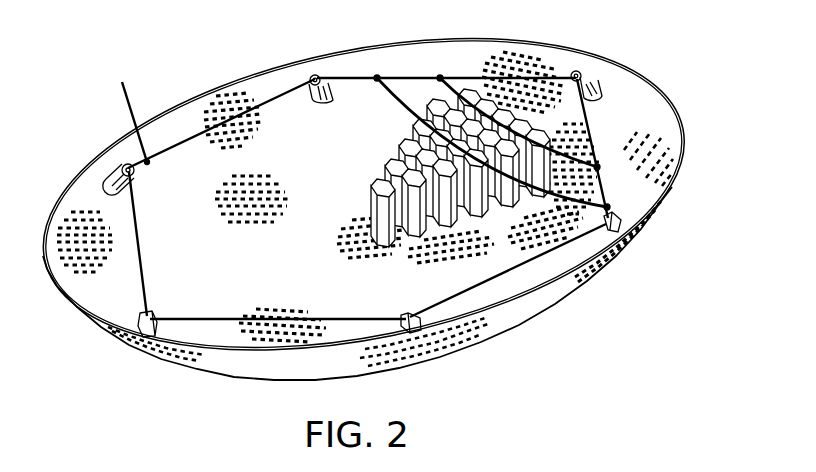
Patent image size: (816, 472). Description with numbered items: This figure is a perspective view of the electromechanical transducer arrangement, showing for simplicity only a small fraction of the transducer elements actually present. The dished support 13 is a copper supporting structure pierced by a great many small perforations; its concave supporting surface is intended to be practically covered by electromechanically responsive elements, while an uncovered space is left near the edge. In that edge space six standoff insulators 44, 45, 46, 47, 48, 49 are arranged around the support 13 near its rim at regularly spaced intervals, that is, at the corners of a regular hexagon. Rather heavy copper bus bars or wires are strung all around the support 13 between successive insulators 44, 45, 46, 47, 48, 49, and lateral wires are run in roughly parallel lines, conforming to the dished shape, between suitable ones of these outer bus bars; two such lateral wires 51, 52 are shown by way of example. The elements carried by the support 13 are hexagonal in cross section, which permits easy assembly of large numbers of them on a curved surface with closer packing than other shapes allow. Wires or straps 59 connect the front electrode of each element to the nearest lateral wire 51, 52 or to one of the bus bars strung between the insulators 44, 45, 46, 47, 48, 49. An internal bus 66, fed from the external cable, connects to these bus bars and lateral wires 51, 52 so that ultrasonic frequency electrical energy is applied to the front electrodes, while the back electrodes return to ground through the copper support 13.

The support 13 is at (484, 326).
The standoff insulator 44 is at (603, 223).
The standoff insulator 45 is at (582, 75).
The standoff insulator 46 is at (315, 74).
The standoff insulator 47 is at (123, 165).
The standoff insulator 48 is at (155, 315).
The standoff insulator 49 is at (408, 313).
The lateral wire 51 is at (598, 165).
The lateral wire 52 is at (608, 206).
The wires or straps 59 is at (440, 100).
The internal bus 66 is at (128, 96).